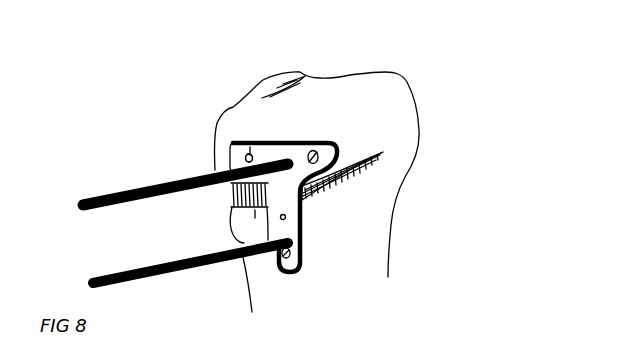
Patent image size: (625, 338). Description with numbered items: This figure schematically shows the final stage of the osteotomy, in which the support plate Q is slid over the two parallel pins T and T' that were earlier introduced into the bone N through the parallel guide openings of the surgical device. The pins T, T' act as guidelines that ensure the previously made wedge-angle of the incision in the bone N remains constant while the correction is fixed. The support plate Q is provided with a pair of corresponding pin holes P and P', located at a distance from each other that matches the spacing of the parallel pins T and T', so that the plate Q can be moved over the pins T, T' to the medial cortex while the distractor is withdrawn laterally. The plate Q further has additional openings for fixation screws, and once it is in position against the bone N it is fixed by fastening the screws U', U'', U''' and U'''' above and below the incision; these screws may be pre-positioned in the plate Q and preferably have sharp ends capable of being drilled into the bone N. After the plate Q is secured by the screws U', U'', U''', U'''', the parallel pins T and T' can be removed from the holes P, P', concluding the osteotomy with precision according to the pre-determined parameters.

The parallel pin T is at (190, 172).
The parallel pin T' is at (185, 134).
The pin hole P is at (244, 91).
The pin hole P' is at (222, 101).
The support plate Q is at (280, 193).
The bone N is at (370, 173).
The screw U' is at (350, 100).
The screw U'' is at (388, 113).
The screw U''' is at (387, 248).
The screw U'''' is at (384, 279).